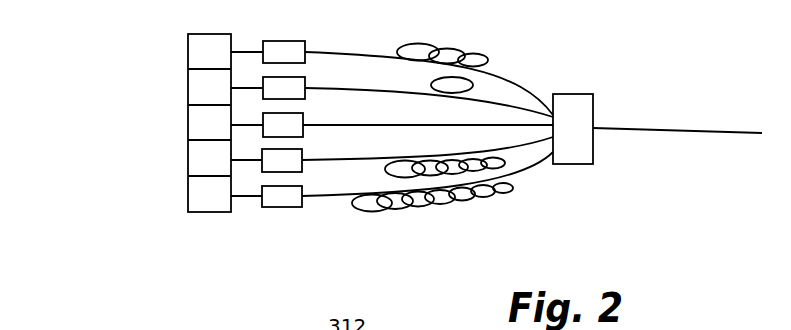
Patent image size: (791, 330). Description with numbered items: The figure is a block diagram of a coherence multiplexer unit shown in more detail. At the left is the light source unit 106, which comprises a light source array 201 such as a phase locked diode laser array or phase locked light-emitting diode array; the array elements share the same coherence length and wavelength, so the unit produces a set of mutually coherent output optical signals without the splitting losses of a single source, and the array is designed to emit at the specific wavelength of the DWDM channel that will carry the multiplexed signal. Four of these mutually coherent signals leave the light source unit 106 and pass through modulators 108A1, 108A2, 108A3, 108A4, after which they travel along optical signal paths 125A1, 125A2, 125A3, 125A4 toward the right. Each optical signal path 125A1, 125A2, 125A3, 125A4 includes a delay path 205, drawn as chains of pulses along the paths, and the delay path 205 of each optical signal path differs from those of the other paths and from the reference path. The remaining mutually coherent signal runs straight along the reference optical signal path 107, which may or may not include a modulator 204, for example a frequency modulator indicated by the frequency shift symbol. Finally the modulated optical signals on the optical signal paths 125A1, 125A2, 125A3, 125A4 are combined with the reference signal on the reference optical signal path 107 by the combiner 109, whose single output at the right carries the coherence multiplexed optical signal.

The light source unit 106 is at (138, 123).
The light source array 201 is at (173, 128).
The modulator 108A1 is at (297, 38).
The modulator 108A2 is at (299, 74).
The modulator 108A3 is at (303, 151).
The modulator 108A4 is at (285, 209).
The modulator 204 is at (300, 113).
The reference optical signal path 107 is at (428, 115).
The combiner 109 is at (575, 94).
The optical signal path 125A1 is at (492, 72).
The optical signal path 125A2 is at (500, 99).
The optical signal path 125A3 is at (532, 150).
The optical signal path 125A4 is at (517, 177).
The delay path 205 is at (442, 55).